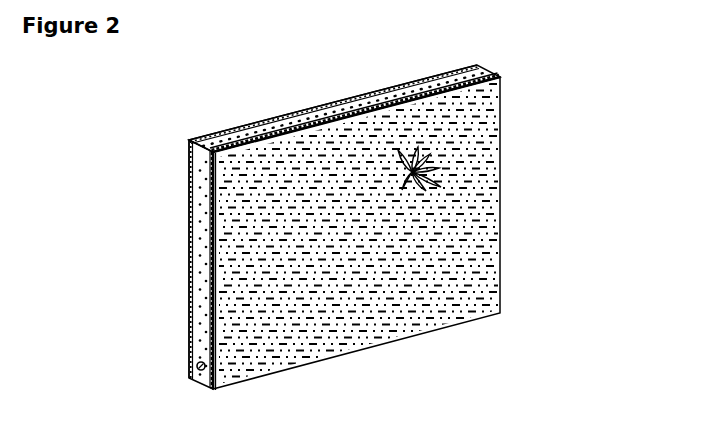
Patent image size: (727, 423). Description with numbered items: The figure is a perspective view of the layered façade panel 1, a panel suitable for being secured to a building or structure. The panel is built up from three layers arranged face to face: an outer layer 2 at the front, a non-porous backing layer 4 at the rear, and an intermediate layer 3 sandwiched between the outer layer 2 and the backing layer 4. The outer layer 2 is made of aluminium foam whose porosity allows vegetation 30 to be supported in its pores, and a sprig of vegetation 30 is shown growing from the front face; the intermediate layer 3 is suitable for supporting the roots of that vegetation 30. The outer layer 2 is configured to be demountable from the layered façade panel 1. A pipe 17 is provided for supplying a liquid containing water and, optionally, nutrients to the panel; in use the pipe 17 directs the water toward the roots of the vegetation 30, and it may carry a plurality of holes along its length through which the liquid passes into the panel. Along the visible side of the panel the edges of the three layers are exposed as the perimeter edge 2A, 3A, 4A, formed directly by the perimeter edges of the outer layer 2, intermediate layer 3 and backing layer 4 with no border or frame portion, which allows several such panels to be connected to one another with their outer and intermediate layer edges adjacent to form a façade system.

The layered façade panel 1 is at (364, 229).
The outer layer 2 is at (485, 113).
The intermediate layer 3 is at (448, 72).
The non-porous backing layer 4 is at (320, 103).
The perimeter edge of outer layer 2A is at (212, 290).
The perimeter edge of intermediate layer 3A is at (203, 242).
The perimeter edge of backing layer 4A is at (188, 167).
The pipe 17 is at (198, 365).
The vegetation 30 is at (412, 172).